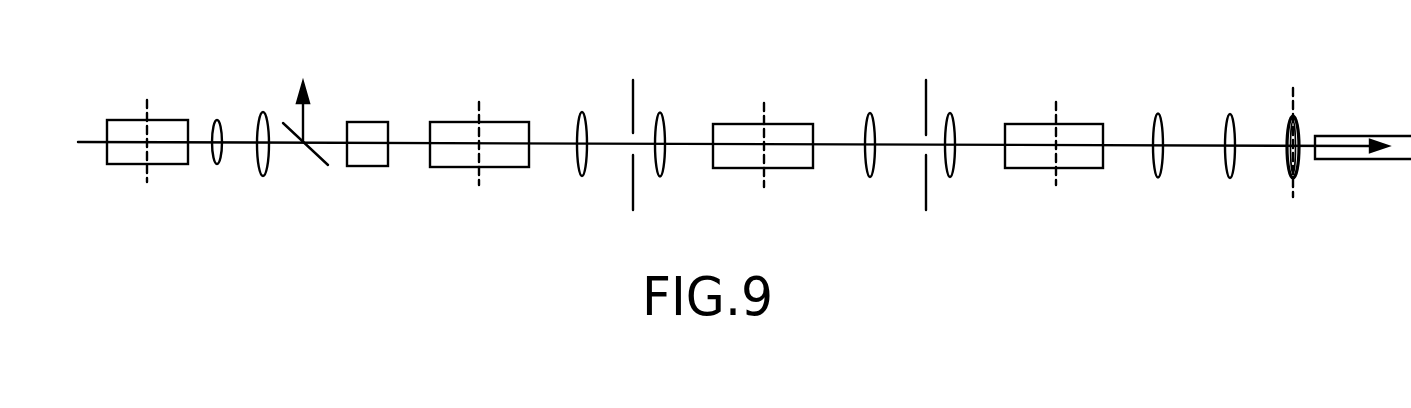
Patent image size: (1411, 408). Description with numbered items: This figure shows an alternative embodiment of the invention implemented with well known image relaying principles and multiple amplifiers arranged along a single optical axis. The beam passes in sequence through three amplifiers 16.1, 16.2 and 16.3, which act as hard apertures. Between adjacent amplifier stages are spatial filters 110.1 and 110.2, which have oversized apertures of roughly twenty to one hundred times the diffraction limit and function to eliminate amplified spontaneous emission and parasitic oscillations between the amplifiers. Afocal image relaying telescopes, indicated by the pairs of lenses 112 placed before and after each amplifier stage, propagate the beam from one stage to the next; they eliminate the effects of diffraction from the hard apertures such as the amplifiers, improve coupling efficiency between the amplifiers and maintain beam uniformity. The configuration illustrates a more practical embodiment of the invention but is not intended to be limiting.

The lenses 112 is at (263, 112).
The amplifier 16.1 is at (433, 122).
The amplifier 16.2 is at (723, 124).
The amplifier 16.3 is at (1020, 124).
The spatial filter 110.1 is at (633, 95).
The spatial filter 110.2 is at (926, 95).